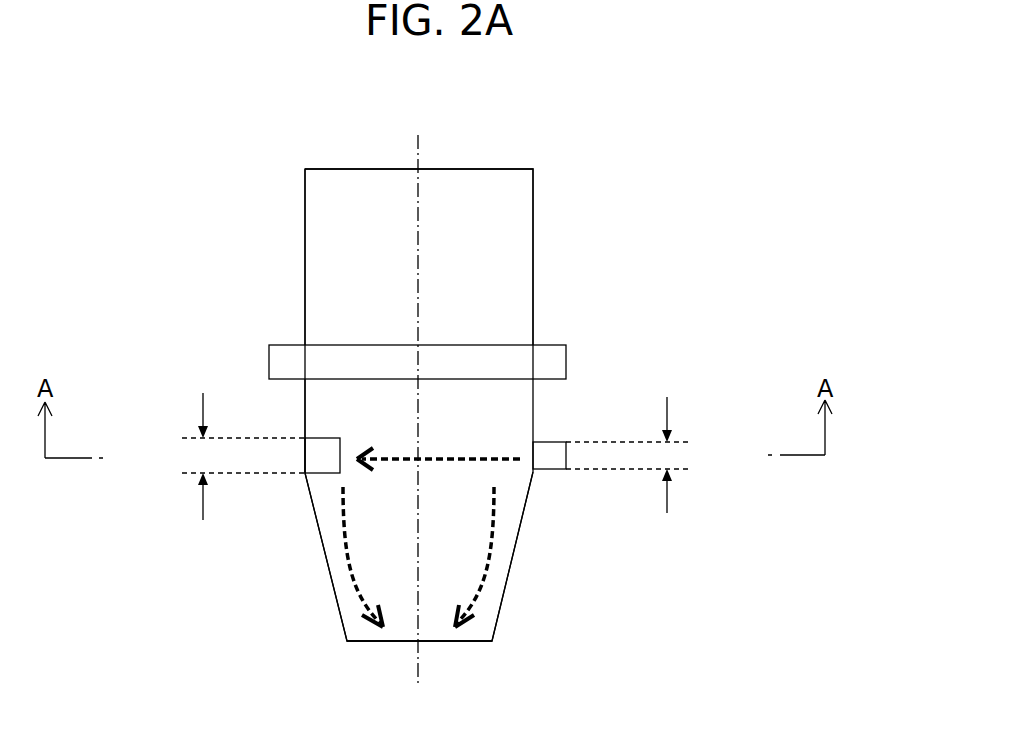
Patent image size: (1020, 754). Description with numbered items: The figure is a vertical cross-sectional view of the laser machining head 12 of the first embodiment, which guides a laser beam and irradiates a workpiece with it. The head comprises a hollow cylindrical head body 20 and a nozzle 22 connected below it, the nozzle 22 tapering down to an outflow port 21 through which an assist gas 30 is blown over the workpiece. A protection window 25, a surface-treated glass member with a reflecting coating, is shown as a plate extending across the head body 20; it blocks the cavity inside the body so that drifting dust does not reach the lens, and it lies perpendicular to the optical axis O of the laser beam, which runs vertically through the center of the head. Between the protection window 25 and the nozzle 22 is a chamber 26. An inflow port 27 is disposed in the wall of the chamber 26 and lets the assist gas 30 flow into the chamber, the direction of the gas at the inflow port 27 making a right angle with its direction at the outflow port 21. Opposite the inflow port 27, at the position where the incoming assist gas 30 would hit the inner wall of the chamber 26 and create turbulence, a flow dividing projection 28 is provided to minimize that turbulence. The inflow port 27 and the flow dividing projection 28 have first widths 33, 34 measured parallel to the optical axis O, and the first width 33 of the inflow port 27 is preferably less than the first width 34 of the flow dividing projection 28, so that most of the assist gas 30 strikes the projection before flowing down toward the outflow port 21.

The optical axis O is at (418, 147).
The laser machining head 12 is at (672, 137).
The head body 20 is at (533, 203).
The outflow port 21 is at (452, 642).
The nozzle 22 is at (330, 592).
The protection window 25 is at (545, 357).
The chamber 26 is at (320, 414).
The inflow port 27 is at (552, 472).
The flow dividing projection 28 is at (323, 465).
The assist gas 30 is at (487, 457).
The first width of the inflow port 33 is at (667, 408).
The first width of the flow dividing projection 34 is at (203, 398).